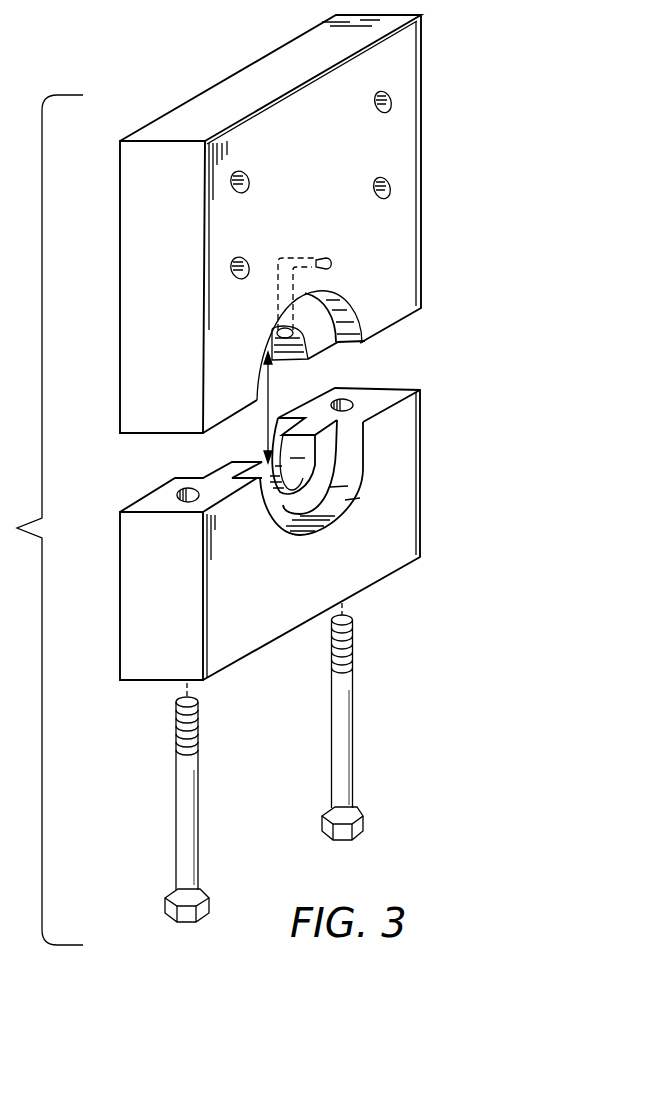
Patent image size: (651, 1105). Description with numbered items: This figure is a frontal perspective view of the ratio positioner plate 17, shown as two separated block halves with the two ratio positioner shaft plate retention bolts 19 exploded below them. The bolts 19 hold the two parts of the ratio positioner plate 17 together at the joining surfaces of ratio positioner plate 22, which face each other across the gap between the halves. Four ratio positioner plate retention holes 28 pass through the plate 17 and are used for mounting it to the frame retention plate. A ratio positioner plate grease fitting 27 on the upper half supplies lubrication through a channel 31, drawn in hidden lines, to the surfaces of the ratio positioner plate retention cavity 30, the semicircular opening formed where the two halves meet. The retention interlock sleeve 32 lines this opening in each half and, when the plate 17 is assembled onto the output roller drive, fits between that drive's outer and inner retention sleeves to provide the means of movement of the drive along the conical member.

The ratio positioner plate 17 is at (120, 316).
The ratio positioner shaft plate retention bolt 19 is at (322, 827).
The joining surfaces of ratio positioner plate 22 is at (147, 500).
The ratio positioner plate grease fitting 27 is at (333, 263).
The ratio positioner plate retention hole 28 is at (231, 184).
The ratio positioner plate retention cavity 30 is at (265, 412).
The channel 31 is at (283, 258).
The retention interlock sleeve 32 is at (318, 338).